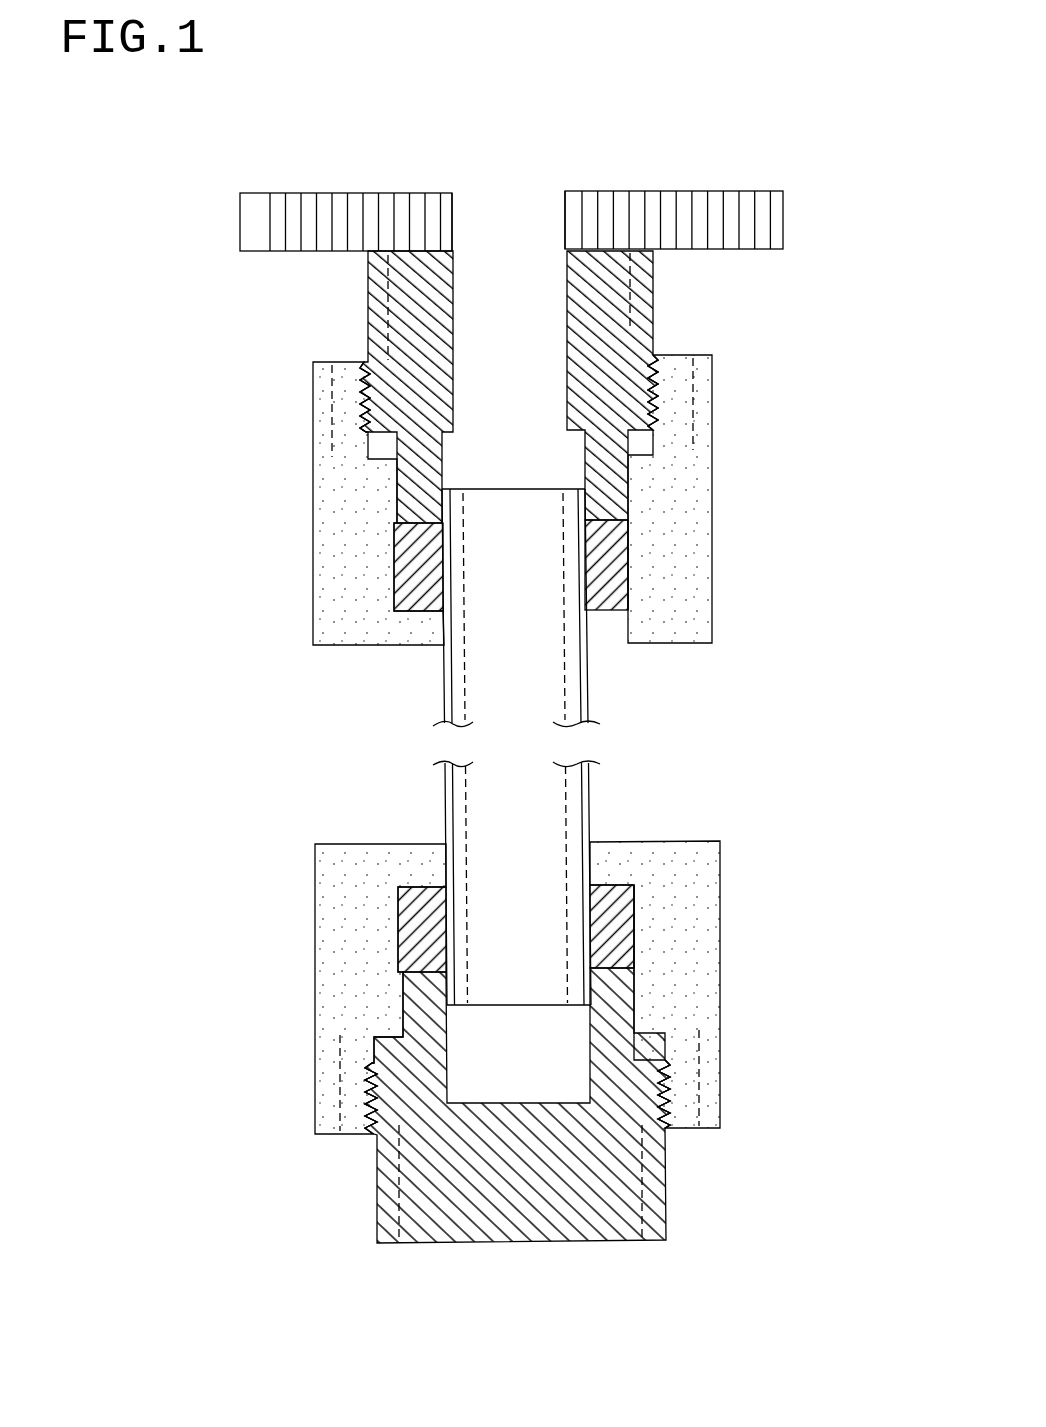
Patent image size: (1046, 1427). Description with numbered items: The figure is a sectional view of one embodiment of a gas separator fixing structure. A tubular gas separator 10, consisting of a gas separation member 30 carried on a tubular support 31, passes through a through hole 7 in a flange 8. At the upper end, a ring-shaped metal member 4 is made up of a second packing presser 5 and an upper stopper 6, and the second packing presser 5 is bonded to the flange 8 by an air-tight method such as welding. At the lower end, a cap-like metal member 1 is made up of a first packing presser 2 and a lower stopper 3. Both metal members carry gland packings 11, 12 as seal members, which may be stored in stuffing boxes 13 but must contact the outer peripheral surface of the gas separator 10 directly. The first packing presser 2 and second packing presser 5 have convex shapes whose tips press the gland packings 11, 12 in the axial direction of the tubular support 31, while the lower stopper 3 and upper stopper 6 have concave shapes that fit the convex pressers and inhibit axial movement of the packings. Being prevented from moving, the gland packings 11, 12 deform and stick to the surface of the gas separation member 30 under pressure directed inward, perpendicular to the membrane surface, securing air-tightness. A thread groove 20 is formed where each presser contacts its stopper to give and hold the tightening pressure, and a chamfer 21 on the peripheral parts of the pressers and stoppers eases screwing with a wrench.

The cap-like metal member 1 is at (229, 1253).
The first packing presser 2 is at (418, 1185).
The lower stopper 3 is at (330, 892).
The ring-shaped metal member 4 is at (200, 255).
The second packing presser 5 is at (380, 300).
The upper stopper 6 is at (325, 527).
The through hole 7 is at (528, 242).
The flange 8 is at (765, 222).
The gas separator 10 is at (441, 682).
The gland packing 11 is at (615, 920).
The gland packing 12 is at (600, 581).
The stuffing box 13 is at (632, 541).
The thread groove 20 is at (653, 400).
The chamfer 21 is at (692, 380).
The gas separation member 30 is at (588, 817).
The tubular support 31 is at (569, 803).